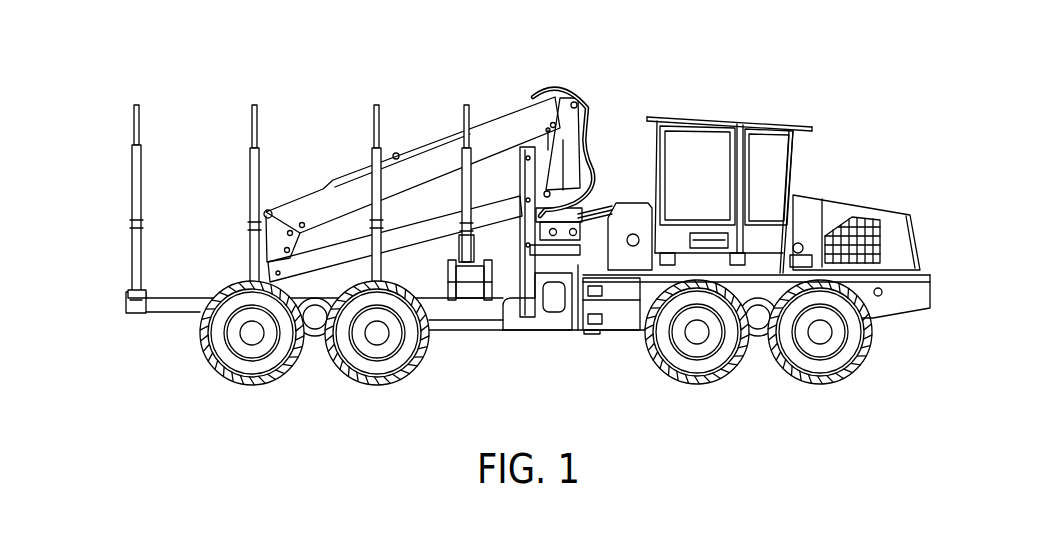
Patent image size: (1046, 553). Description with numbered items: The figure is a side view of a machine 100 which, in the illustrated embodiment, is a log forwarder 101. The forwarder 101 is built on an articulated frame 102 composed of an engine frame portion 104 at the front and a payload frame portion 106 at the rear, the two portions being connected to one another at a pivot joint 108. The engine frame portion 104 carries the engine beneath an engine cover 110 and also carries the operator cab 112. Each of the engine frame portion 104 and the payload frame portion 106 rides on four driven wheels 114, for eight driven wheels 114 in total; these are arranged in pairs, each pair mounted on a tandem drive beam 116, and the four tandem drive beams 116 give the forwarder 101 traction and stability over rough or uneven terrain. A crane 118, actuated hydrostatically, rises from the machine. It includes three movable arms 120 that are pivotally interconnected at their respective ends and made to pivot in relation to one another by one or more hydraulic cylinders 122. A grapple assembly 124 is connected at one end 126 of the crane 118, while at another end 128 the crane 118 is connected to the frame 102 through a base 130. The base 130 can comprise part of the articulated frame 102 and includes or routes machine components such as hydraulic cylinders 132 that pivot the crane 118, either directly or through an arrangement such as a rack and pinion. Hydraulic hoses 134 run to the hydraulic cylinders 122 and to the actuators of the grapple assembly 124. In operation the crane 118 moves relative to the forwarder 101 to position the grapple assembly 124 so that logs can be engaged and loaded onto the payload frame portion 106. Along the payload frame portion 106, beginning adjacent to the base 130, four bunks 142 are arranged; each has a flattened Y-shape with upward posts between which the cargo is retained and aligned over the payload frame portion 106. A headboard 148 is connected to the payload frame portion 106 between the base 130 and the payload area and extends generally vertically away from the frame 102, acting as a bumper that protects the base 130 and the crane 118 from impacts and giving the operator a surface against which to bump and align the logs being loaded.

The machine 100 is at (491, 220).
The forwarder 101 is at (716, 227).
The articulated frame 102 is at (295, 347).
The engine frame portion 104 is at (903, 305).
The payload frame portion 106 is at (133, 306).
The pivot joint 108 is at (590, 334).
The engine cover 110 is at (833, 220).
The operator cab 112 is at (770, 120).
The driven wheels 114 is at (392, 386).
The tandem drive beam 116 is at (315, 331).
The crane 118 is at (461, 198).
The movable arms 120 is at (574, 117).
The hydraulic cylinders 122 is at (306, 196).
The grapple assembly 124 is at (450, 273).
The one end 126 is at (472, 128).
The another end 128 is at (590, 185).
The base 130 is at (552, 312).
The hydraulic cylinders 132 is at (550, 257).
The hydraulic hoses 134 is at (614, 203).
The bunks 142 is at (116, 171).
The headboard 148 is at (548, 128).